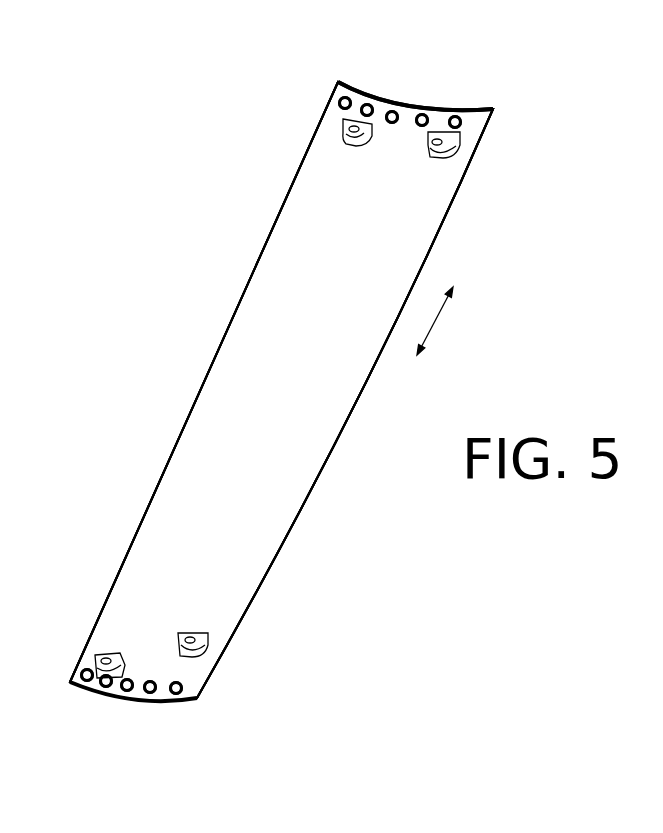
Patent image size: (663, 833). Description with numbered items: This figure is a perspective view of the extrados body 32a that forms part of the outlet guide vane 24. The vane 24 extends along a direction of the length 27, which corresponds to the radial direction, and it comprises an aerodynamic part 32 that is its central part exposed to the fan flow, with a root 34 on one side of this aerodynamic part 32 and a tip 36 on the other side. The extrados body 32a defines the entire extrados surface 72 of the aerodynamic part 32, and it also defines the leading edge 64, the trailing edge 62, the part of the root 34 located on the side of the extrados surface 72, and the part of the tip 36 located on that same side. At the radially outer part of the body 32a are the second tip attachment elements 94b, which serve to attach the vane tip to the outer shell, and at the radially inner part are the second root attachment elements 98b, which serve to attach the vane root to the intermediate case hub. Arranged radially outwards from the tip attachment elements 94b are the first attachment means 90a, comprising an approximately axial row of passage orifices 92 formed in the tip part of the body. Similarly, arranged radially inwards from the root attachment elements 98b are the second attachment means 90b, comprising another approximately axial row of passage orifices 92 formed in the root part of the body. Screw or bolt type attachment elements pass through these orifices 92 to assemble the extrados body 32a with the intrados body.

The outlet guide vane 24 is at (200, 234).
The direction of the length 27 is at (437, 322).
The aerodynamic part 32 is at (188, 431).
The extrados body 32a is at (490, 73).
The root 34 is at (172, 703).
The tip 36 is at (488, 124).
The trailing edge 62 is at (323, 467).
The leading edge 64 is at (147, 510).
The extrados surface 72 is at (237, 380).
The first attachment means 90a is at (408, 35).
The second attachment means 90b is at (110, 767).
The passage orifices 92 is at (392, 112).
The second tip attachment element 94b is at (347, 142).
The second root attachment element 98b is at (107, 660).